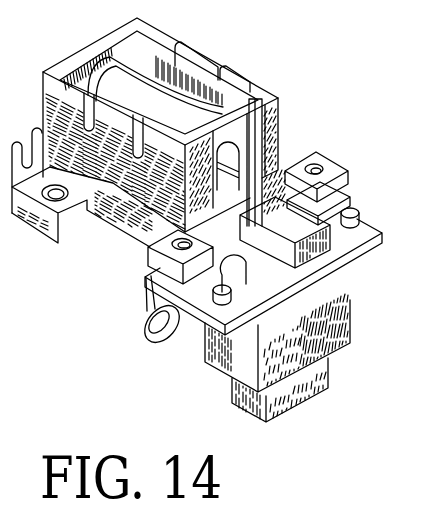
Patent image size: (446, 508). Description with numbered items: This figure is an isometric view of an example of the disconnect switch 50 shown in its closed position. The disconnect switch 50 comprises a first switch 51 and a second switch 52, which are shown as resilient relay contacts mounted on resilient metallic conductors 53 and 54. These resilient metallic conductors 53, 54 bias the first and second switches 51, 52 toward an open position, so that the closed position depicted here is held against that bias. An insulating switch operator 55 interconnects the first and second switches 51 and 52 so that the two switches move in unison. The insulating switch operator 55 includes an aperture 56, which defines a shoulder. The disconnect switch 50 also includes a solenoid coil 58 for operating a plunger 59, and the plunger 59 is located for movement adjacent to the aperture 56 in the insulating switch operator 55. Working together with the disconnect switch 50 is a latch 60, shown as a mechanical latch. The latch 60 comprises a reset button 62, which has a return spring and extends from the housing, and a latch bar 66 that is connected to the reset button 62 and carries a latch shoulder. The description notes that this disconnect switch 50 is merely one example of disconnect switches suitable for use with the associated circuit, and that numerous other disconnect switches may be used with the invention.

The disconnect switch 50 is at (340, 67).
The first switch 51 is at (343, 168).
The second switch 52 is at (173, 268).
The resilient metallic conductor 53 is at (283, 160).
The resilient metallic conductor 54 is at (120, 226).
The insulating switch operator 55 is at (287, 193).
The aperture 56 is at (258, 213).
The solenoid coil 58 is at (128, 84).
The plunger 59 is at (233, 165).
The latch 60 is at (142, 373).
The reset button 62 is at (245, 399).
The latch bar 66 is at (252, 110).